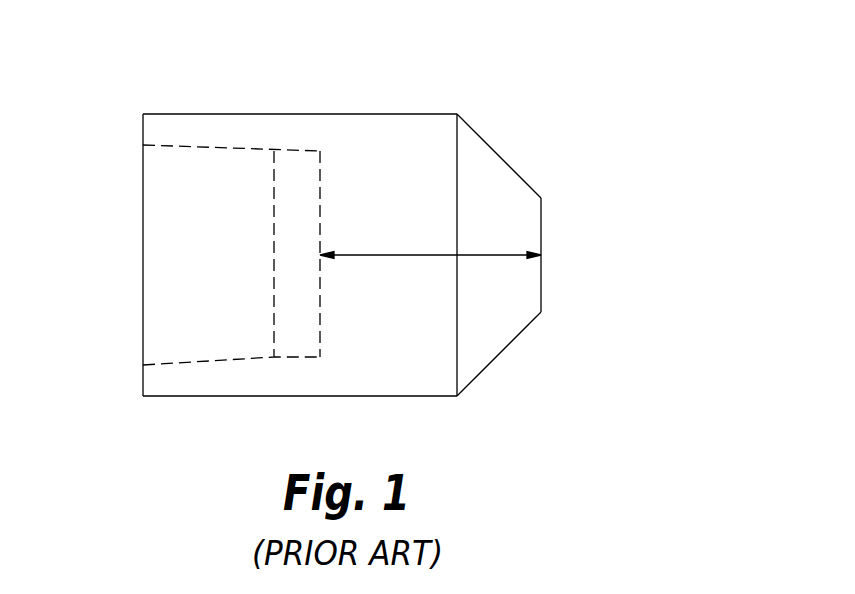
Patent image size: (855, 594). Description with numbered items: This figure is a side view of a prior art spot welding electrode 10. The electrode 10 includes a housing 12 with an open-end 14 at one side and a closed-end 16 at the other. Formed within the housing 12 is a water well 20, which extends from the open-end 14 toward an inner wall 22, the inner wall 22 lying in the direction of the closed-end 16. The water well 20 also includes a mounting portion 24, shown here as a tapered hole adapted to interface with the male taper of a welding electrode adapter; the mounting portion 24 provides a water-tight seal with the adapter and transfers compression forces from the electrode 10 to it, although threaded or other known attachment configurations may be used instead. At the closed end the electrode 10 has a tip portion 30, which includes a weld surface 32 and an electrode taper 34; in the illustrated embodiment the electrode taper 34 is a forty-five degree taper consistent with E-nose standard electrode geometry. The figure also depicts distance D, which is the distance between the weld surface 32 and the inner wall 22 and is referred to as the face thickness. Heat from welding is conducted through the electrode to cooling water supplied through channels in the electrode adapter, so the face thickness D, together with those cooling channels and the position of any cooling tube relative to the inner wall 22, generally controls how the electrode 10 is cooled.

The spot welding electrode 10 is at (572, 55).
The housing 12 is at (257, 114).
The open-end 14 is at (143, 301).
The closed-end 16 is at (535, 272).
The water well 20 is at (192, 259).
The inner wall 22 is at (320, 283).
The mounting portion 24 is at (232, 150).
The tip portion 30 is at (497, 182).
The weld surface 32 is at (541, 223).
The electrode taper 34 is at (502, 352).
The distance D is at (430, 238).